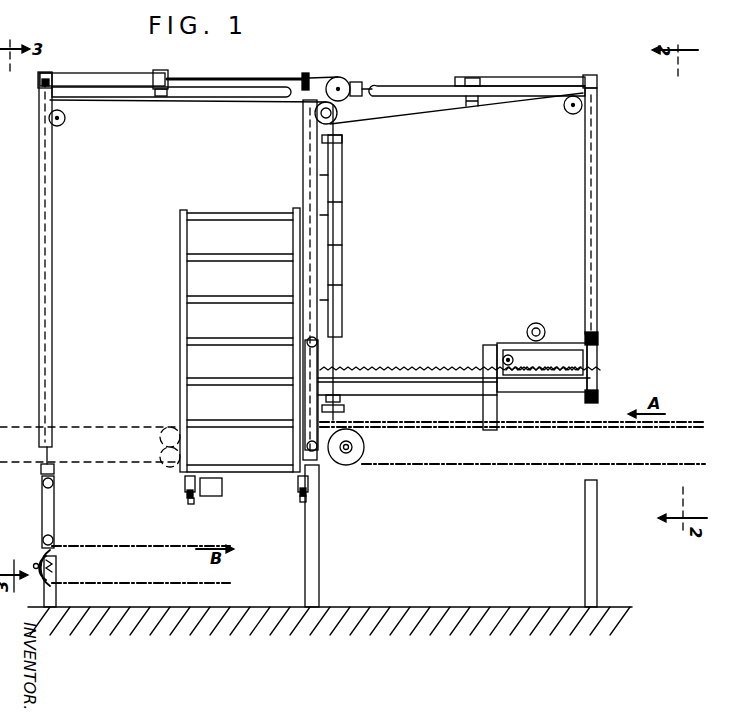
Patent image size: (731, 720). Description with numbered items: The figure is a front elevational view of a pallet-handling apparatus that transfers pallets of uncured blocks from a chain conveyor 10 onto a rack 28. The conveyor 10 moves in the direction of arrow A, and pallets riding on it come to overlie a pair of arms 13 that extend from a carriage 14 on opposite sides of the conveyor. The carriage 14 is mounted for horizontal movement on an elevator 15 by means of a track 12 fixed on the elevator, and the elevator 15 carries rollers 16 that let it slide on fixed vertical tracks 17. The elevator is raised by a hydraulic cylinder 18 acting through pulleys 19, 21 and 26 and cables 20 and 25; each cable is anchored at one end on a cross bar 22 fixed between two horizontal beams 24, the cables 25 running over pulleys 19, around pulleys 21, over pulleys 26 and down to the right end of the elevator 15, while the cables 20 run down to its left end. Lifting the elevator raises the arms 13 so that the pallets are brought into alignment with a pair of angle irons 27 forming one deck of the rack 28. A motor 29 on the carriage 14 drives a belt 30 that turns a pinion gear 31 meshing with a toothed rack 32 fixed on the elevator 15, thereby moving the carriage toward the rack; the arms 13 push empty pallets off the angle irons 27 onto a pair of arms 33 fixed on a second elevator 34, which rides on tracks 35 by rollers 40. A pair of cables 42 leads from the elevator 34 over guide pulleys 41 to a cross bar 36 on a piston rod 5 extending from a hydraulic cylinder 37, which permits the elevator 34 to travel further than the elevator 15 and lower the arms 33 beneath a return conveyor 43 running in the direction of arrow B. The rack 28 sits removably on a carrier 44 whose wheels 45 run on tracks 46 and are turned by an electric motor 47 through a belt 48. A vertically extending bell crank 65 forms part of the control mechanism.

The piston rod 5 is at (248, 75).
The chain conveyor 10 is at (598, 428).
The track 12 is at (428, 390).
The arms 13 is at (422, 430).
The carriage 14 is at (490, 345).
The elevator 15 is at (305, 363).
The rollers 16 is at (318, 452).
The vertical tracks 17 is at (597, 233).
The hydraulic cylinder 18 is at (508, 77).
The pulleys 19 is at (344, 80).
The cables 20 is at (303, 187).
The pulleys 21 is at (338, 120).
The cross bar 22 is at (308, 76).
The horizontal beams 24 is at (120, 96).
The cables 25 is at (346, 100).
The pulleys 26 is at (572, 114).
The angle irons 27 is at (244, 212).
The rack 28 is at (180, 252).
The motor 29 is at (534, 324).
The belt 30 is at (512, 340).
The pinion gear 31 is at (516, 360).
The toothed rack 32 is at (396, 370).
The arms 33 is at (138, 549).
The elevator 34 is at (54, 506).
The tracks 35 is at (52, 284).
The cross bar 36 is at (304, 72).
The hydraulic cylinder 37 is at (112, 75).
The rollers 40 is at (54, 483).
The guide pulleys 41 is at (66, 125).
The cables 42 is at (172, 100).
The conveyor 43 is at (236, 548).
The carrier 44 is at (234, 470).
The wheels 45 is at (186, 492).
The tracks 46 is at (190, 504).
The electric motor 47 is at (222, 488).
The belt 48 is at (206, 498).
The bell crank 65 is at (305, 440).